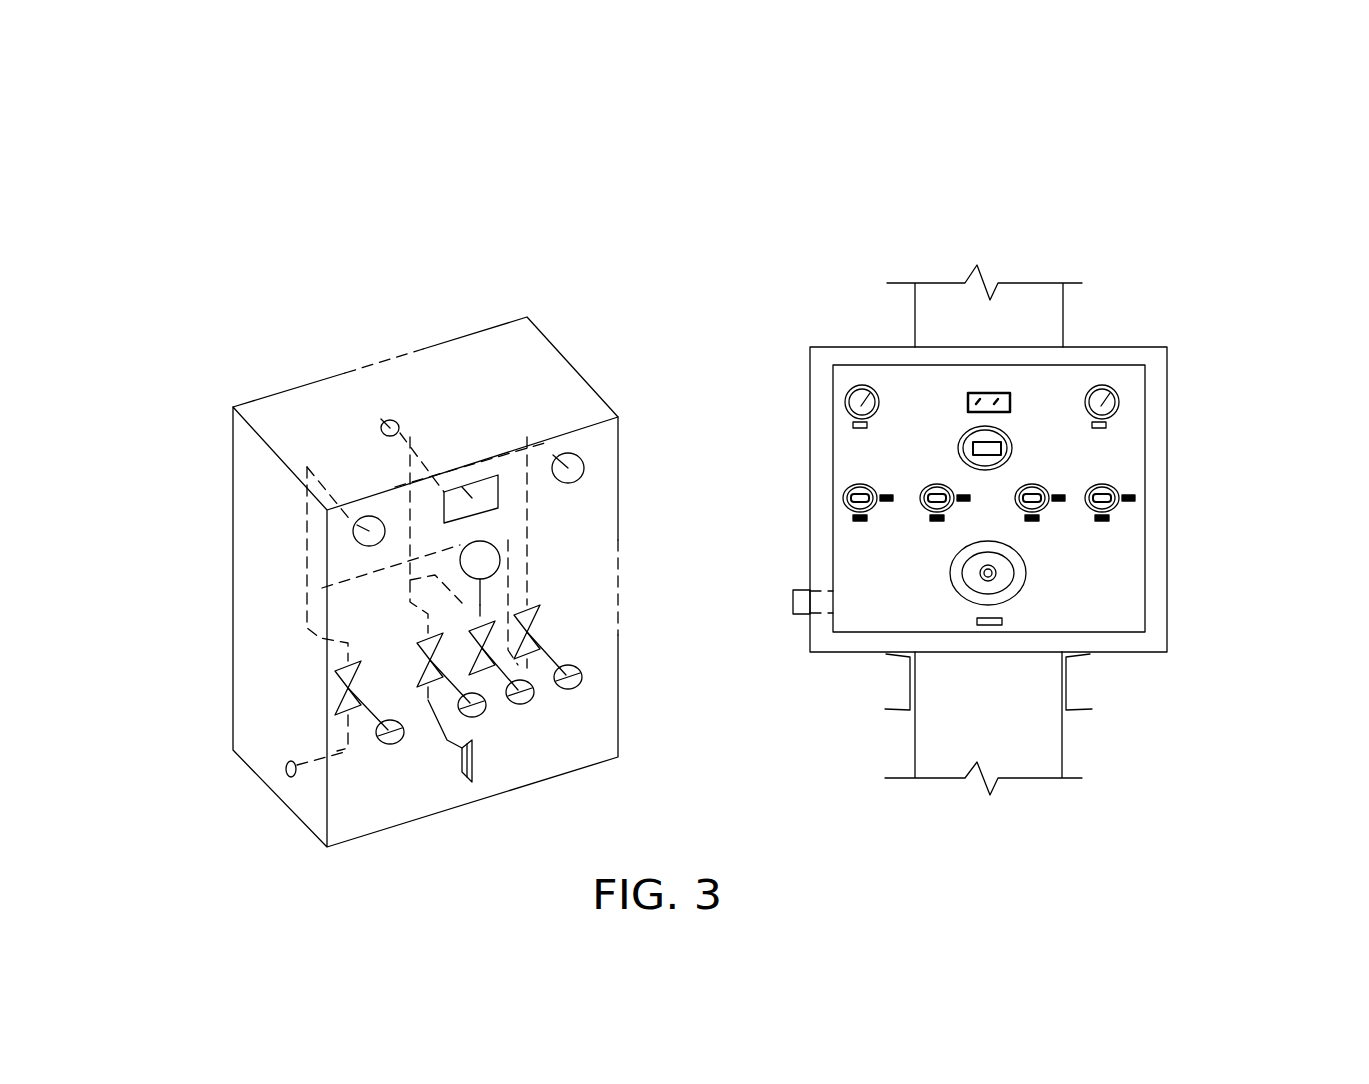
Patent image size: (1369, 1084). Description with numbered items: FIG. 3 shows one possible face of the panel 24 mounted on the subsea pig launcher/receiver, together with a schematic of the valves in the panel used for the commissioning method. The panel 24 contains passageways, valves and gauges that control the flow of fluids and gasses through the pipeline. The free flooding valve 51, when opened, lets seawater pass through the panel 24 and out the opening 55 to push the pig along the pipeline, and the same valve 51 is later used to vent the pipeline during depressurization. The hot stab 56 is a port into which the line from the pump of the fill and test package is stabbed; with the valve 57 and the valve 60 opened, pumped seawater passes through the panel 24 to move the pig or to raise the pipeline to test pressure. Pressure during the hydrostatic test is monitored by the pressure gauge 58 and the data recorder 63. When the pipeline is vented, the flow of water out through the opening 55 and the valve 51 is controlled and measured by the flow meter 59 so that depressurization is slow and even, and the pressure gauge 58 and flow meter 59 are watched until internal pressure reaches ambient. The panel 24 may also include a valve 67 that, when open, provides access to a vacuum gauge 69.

The panel 24 is at (748, 516).
The free flooding valve 51 is at (487, 614).
The opening 55 is at (327, 363).
The hot stab 56 is at (838, 692).
The valve 57 is at (539, 608).
The pressure gauge 58 is at (509, 388).
The flow meter 59 is at (752, 363).
The valve 60 is at (867, 563).
The data recorder 63 is at (862, 441).
The valve 67 is at (917, 586).
The vacuum gauge 69 is at (948, 410).